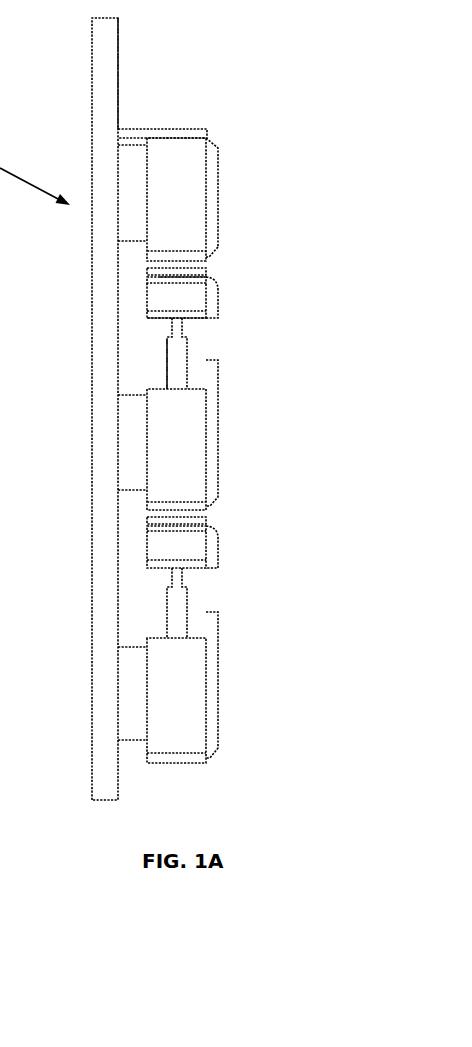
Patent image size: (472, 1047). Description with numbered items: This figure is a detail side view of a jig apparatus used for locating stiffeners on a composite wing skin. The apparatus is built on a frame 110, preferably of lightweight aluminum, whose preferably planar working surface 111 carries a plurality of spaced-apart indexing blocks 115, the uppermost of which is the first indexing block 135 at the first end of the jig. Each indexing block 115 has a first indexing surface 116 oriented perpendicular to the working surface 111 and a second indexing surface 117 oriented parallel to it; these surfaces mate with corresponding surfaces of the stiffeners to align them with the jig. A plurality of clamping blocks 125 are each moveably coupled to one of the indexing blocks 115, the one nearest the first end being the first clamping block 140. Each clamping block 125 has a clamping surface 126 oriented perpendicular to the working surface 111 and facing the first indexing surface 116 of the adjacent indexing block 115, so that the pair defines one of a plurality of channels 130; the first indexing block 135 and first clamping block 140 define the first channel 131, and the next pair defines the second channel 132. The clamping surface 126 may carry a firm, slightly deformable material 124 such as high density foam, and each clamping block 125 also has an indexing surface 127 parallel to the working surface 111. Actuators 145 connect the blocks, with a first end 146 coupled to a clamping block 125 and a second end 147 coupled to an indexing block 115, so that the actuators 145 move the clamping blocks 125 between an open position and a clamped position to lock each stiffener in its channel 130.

The frame 110 is at (110, 47).
The working surface 111 is at (126, 88).
The indexing block 115 is at (229, 442).
The first indexing block 135 is at (190, 162).
The first indexing surface 116 is at (208, 255).
The second indexing surface 117 is at (212, 198).
The channel 130 is at (243, 388).
The first channel 131 is at (183, 259).
The second channel 132 is at (187, 517).
The firm material 124 is at (193, 272).
The clamping block 125 is at (243, 430).
The first clamping block 140 is at (200, 295).
The indexing surface 127 is at (212, 313).
The clamping surface 126 is at (160, 281).
The first end 146 is at (142, 326).
The second end 147 is at (152, 372).
The actuator 145 is at (177, 348).